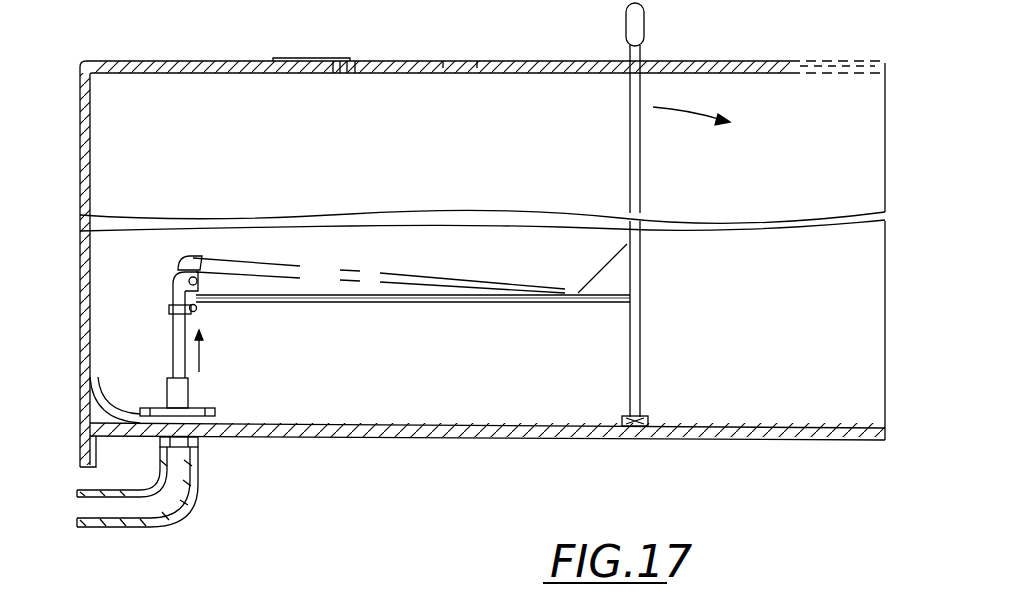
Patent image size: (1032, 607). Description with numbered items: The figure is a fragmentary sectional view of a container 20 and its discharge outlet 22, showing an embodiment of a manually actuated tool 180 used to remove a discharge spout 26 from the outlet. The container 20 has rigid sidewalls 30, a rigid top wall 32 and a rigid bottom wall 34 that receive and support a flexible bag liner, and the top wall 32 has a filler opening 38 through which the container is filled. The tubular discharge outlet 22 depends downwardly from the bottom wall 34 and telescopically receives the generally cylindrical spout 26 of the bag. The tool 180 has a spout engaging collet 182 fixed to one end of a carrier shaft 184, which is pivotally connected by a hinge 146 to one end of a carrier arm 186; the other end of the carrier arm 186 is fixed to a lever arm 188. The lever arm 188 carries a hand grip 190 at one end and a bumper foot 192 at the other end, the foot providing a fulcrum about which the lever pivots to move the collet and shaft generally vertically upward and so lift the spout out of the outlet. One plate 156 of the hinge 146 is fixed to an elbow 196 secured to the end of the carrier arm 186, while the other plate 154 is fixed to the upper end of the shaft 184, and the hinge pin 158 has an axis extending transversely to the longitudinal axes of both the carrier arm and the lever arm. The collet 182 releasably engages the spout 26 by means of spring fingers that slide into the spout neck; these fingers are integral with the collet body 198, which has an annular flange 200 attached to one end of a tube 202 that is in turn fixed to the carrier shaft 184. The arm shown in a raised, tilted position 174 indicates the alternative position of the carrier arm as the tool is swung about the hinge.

The container 20 is at (178, 50).
The tubular discharge outlet 22 is at (205, 503).
The discharge spout 26 is at (205, 441).
The sidewalls 30 is at (80, 185).
The top wall 32 is at (203, 60).
The bottom wall 34 is at (470, 437).
The filler opening 38 is at (378, 65).
The hinge 146 is at (205, 302).
The hinge plate 154 is at (170, 284).
The hinge plate 156 is at (170, 262).
The hinge pin 158 is at (200, 312).
The arm in raised position 174 is at (612, 266).
The manually actuated tool 180 is at (652, 330).
The spout engaging collet 182 is at (205, 400).
The carrier shaft 184 is at (171, 340).
The carrier arm 186 is at (440, 303).
The lever arm 188 is at (641, 176).
The hand grip 190 is at (646, 27).
The bumper foot 192 is at (647, 418).
The elbow 196 is at (158, 313).
The collet body 198 is at (163, 396).
The annular flange 200 is at (215, 412).
The tube 202 is at (195, 388).